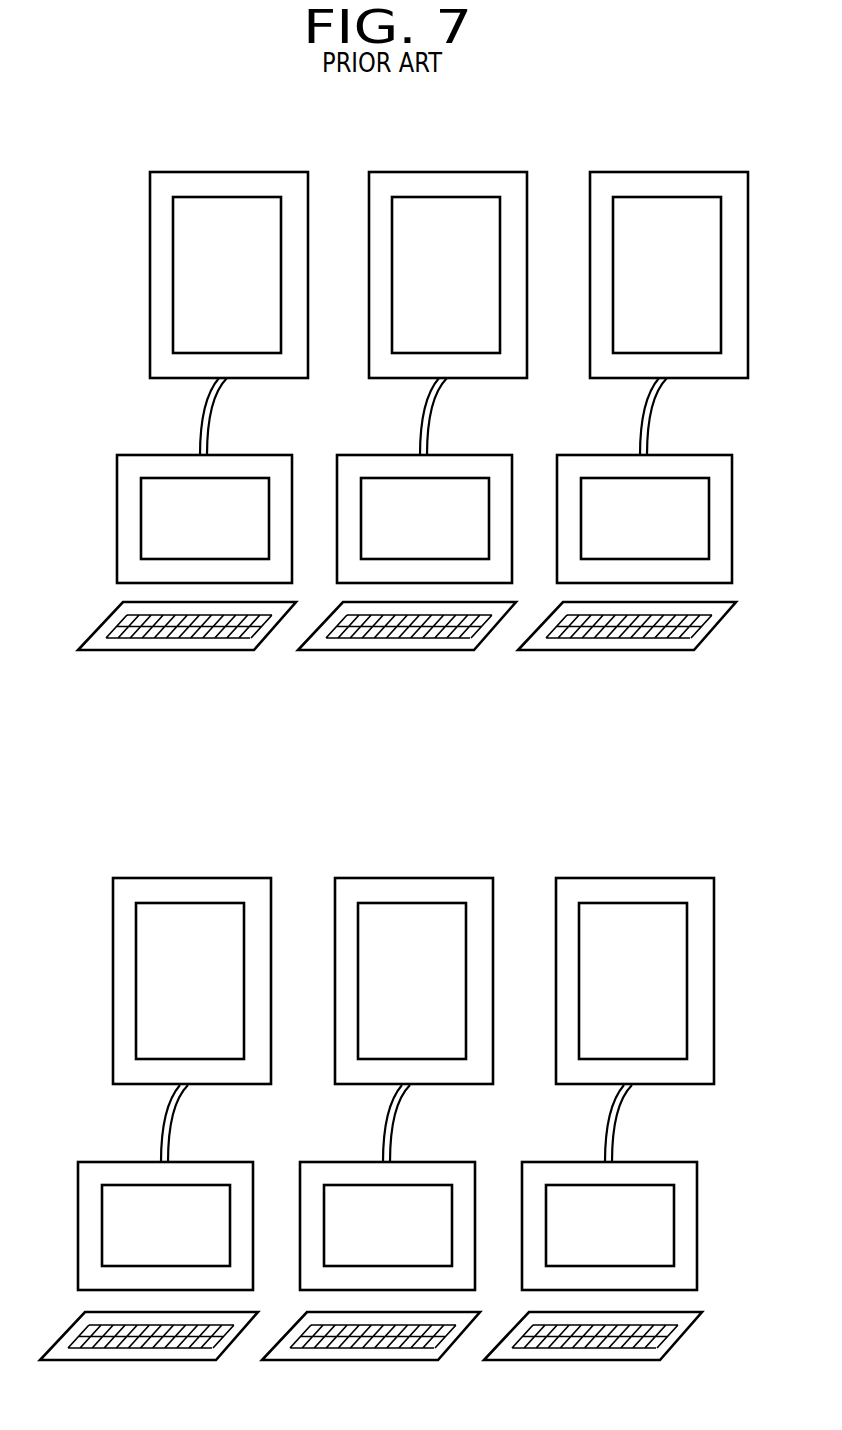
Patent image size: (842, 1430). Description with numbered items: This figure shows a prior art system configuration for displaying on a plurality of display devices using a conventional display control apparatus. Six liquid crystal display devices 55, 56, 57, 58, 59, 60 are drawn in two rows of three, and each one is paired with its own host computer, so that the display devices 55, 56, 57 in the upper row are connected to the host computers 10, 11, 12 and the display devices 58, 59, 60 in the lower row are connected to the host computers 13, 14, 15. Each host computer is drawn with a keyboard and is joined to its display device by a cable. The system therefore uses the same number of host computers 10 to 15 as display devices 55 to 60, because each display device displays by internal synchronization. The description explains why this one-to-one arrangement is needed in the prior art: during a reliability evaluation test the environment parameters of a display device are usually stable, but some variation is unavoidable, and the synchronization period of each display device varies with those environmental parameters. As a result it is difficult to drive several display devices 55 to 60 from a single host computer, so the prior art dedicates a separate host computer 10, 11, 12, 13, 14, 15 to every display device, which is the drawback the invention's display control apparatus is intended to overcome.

The display device 55 is at (257, 172).
The display device 56 is at (470, 172).
The display device 57 is at (692, 172).
The display device 58 is at (218, 878).
The display device 59 is at (442, 878).
The display device 60 is at (662, 878).
The host computer 10 is at (256, 455).
The host computer 11 is at (485, 455).
The host computer 12 is at (697, 455).
The host computer 13 is at (224, 1162).
The host computer 14 is at (443, 1162).
The host computer 15 is at (662, 1162).